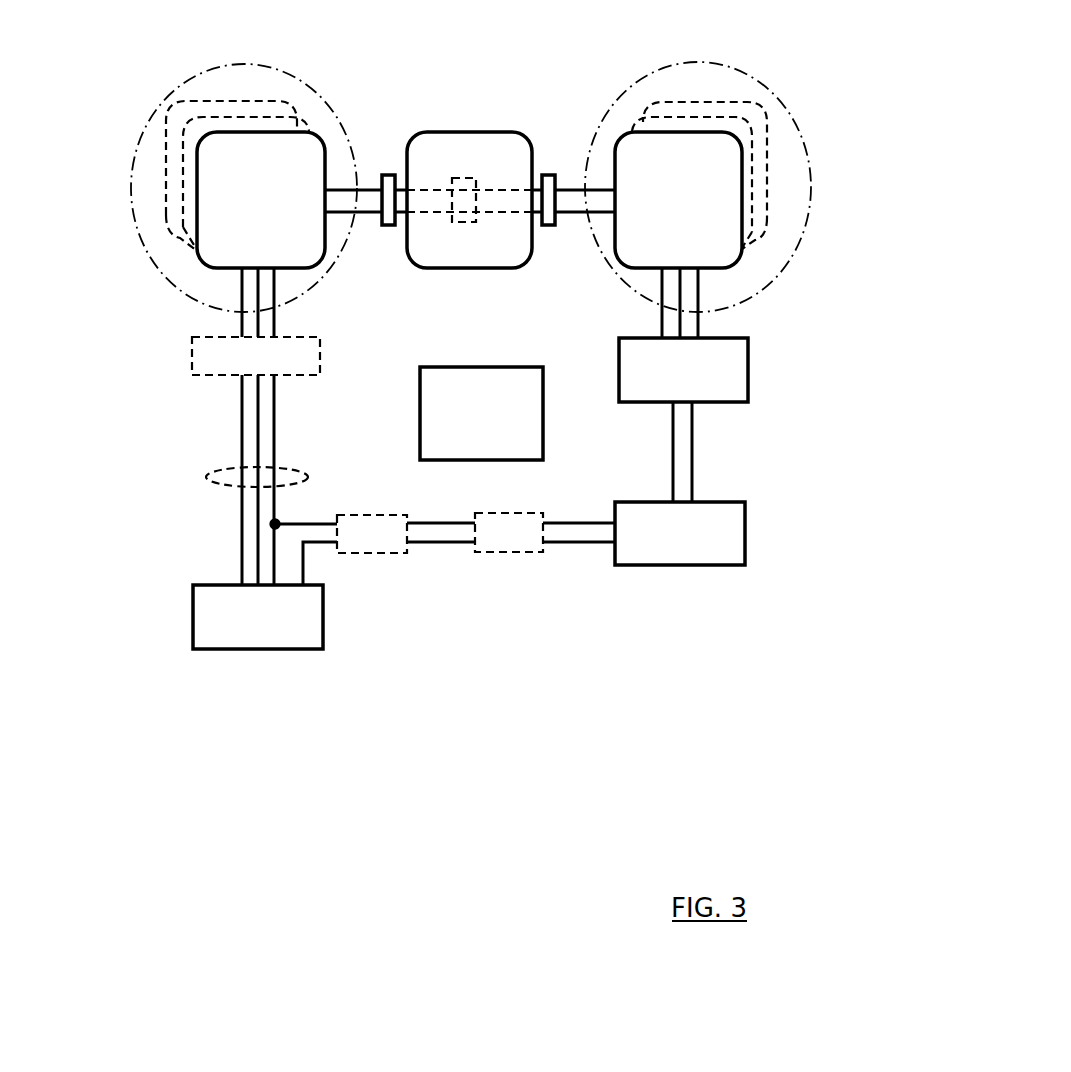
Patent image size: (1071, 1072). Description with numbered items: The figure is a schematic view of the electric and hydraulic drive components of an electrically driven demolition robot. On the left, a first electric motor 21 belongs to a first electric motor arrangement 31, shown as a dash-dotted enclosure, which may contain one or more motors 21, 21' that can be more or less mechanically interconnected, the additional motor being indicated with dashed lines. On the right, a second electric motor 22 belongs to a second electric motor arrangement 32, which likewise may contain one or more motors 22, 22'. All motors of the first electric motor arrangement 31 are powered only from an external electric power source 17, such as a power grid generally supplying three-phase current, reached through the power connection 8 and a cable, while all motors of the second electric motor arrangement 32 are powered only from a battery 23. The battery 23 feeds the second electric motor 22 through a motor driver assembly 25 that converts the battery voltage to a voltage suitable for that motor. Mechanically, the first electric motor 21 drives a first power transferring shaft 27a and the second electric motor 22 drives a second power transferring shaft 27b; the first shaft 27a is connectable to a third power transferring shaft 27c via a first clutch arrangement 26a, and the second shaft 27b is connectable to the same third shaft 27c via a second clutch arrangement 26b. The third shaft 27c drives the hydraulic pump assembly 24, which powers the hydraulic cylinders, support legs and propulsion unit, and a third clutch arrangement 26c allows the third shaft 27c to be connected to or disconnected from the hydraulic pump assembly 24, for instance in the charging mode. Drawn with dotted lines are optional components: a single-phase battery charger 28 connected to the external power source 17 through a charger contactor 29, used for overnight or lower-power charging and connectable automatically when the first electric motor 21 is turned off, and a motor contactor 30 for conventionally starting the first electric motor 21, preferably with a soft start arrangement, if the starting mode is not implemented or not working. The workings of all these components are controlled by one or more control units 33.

The power connection 8 is at (306, 469).
The external electric power source 17 is at (245, 632).
The first electric motor 21 is at (261, 200).
The further electric motor of the first electric motor arrangement 21' is at (229, 139).
The second electric motor 22 is at (678, 200).
The further electric motor of the second electric motor arrangement 22' is at (690, 133).
The battery 23 is at (670, 547).
The hydraulic pump assembly 24 is at (480, 174).
The motor driver assembly 25 is at (670, 389).
The first clutch arrangement 26a is at (387, 175).
The second clutch arrangement 26b is at (543, 175).
The third clutch arrangement 26c is at (463, 213).
The first power transferring shaft 27a is at (363, 200).
The second power transferring shaft 27b is at (577, 200).
The third power transferring shaft 27c is at (432, 197).
The single-phase battery charger 28 is at (495, 549).
The charger contactor 29 is at (358, 549).
The motor contactor 30 is at (252, 369).
The first electric motor arrangement 31 is at (175, 92).
The second electric motor arrangement 32 is at (633, 82).
The control unit 33 is at (465, 429).